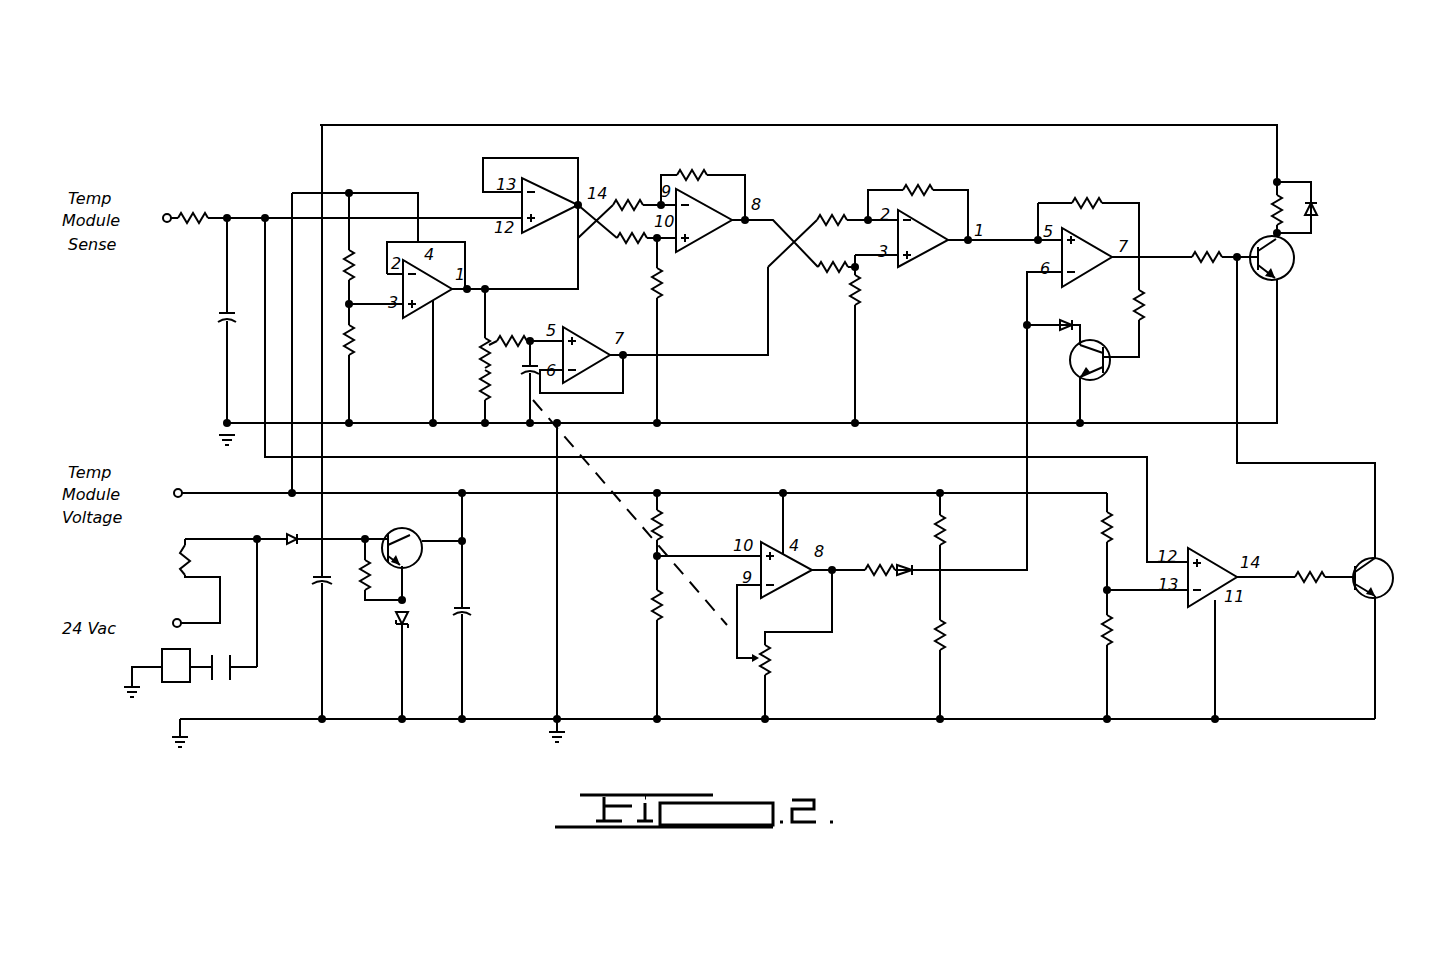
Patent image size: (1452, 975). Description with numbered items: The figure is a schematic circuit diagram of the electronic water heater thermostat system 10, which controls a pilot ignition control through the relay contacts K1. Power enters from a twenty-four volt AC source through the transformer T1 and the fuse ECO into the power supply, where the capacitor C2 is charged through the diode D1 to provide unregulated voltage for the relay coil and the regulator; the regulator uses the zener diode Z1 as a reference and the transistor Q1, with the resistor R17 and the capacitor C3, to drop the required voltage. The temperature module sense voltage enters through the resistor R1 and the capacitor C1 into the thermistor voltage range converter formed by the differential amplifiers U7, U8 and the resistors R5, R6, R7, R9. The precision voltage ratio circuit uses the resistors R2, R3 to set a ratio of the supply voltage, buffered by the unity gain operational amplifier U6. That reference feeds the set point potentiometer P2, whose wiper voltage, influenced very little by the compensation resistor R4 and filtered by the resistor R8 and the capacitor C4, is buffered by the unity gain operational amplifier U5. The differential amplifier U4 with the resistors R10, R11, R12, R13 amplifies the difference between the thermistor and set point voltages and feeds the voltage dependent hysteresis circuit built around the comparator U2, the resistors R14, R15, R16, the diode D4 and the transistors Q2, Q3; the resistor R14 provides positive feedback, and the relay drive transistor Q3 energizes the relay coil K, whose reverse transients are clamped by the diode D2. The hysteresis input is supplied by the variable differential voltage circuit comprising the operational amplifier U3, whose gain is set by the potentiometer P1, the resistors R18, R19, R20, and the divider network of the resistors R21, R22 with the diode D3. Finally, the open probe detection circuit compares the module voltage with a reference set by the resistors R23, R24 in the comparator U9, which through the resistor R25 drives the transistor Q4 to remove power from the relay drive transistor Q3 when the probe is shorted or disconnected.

The electronic water heater thermostat system 10 is at (1033, 80).
The resistor R1 is at (200, 225).
The capacitor C1 is at (218, 319).
The resistor R2 is at (352, 260).
The resistor R3 is at (352, 340).
The unity gain operational amplifier U6 is at (438, 298).
The set point potentiometer P2 is at (488, 346).
The compensation resistor R4 is at (482, 374).
The resistor R8 is at (507, 336).
The capacitor C4 is at (522, 378).
The differential amplifier U7 is at (563, 214).
The resistor R5 is at (625, 200).
The resistor R6 is at (630, 244).
The resistor R7 is at (687, 172).
The differential amplifier U8 is at (717, 238).
The resistor R9 is at (660, 285).
The operational amplifier U5 is at (590, 348).
The resistor R10 is at (826, 216).
The resistor R11 is at (836, 264).
The differential amplifier U4 is at (935, 252).
The resistor R12 is at (923, 184).
The resistor R13 is at (858, 292).
The quad operational amplifier U2 is at (1090, 244).
The resistor R14 is at (1087, 196).
The resistor R15 is at (1208, 254).
The resistor R16 is at (1143, 295).
The diode D4 is at (1062, 322).
The transistor Q2 is at (1110, 371).
The relay coil K is at (1274, 210).
The diode D2 is at (1317, 208).
The relay drive transistor Q3 is at (1294, 258).
The diode D1 is at (290, 536).
The fuse ECO is at (190, 557).
The transformer T1 is at (170, 683).
The relay contacts K1 is at (222, 683).
The capacitor C2 is at (312, 583).
The transistor Q1 is at (410, 533).
The resistor R17 is at (360, 584).
The zener diode Z1 is at (408, 624).
The capacitor C3 is at (470, 612).
The resistor R18 is at (660, 528).
The resistor R19 is at (660, 605).
The operational amplifier U3 is at (808, 542).
The potentiometer P1 is at (770, 662).
The resistor R20 is at (880, 568).
The diode D3 is at (905, 576).
The resistor R21 is at (935, 525).
The resistor R22 is at (938, 637).
The resistor R23 is at (1103, 527).
The resistor R24 is at (1102, 632).
The comparator U9 is at (1210, 548).
The resistor R25 is at (1311, 583).
The transistor Q4 is at (1380, 563).